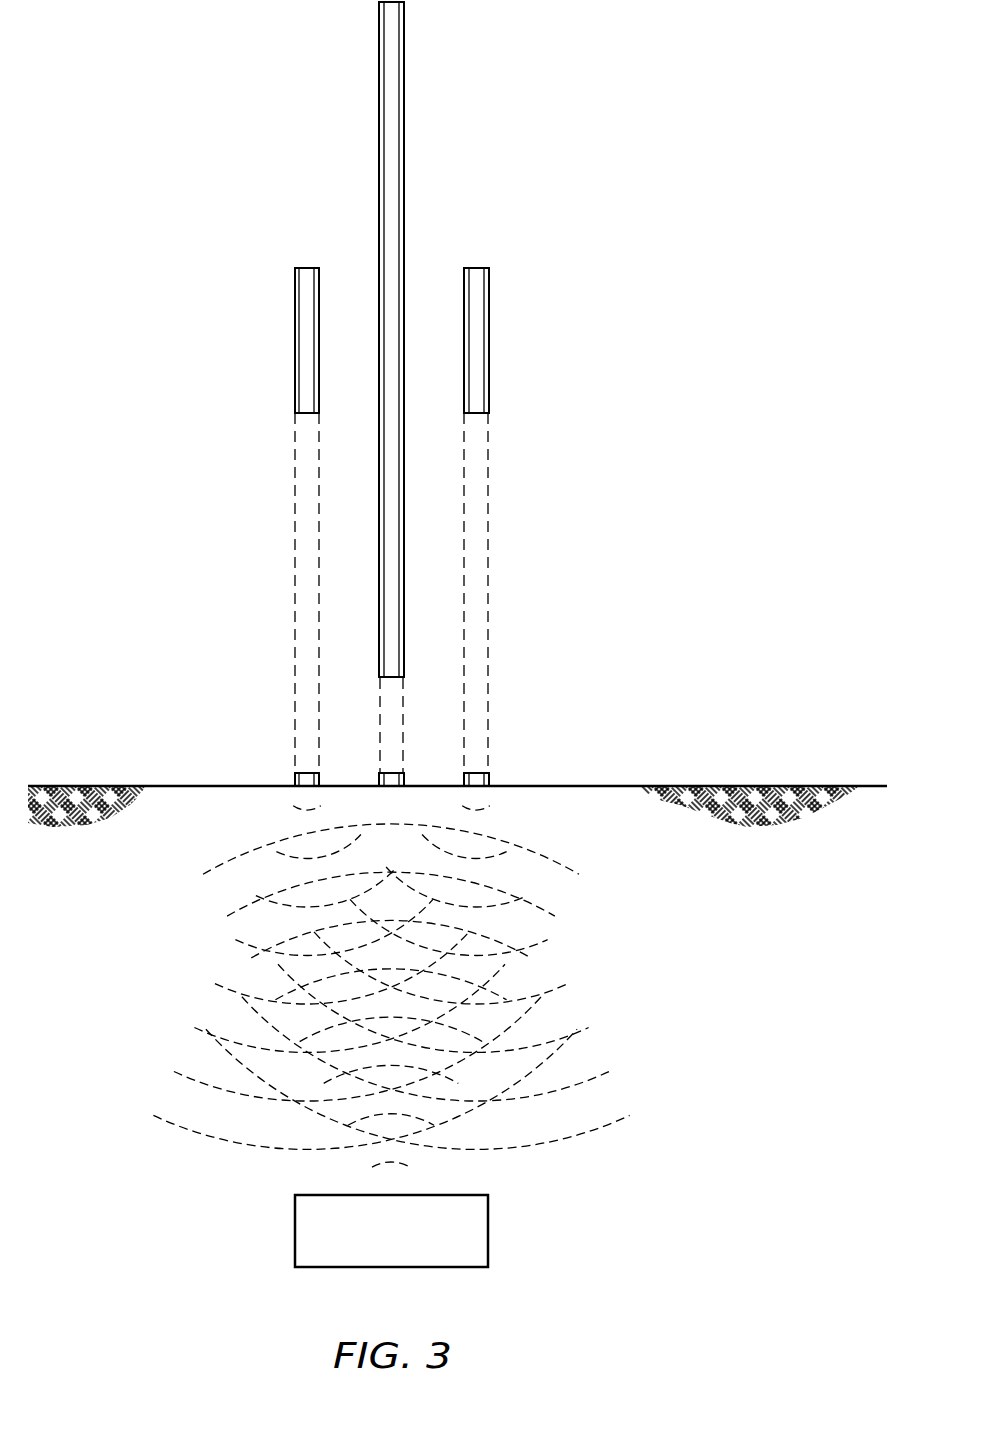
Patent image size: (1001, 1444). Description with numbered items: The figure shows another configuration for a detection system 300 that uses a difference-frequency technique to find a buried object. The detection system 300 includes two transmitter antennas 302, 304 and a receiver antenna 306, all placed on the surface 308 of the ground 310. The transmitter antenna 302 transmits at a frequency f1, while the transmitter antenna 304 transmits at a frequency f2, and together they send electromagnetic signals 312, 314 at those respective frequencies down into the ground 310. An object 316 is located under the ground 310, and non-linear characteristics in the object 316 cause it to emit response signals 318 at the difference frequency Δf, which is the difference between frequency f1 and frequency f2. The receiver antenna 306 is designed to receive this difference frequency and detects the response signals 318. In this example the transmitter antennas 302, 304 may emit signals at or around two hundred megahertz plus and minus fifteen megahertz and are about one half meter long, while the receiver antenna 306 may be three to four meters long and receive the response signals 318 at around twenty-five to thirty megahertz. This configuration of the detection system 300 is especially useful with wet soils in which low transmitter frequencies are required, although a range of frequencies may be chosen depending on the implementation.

The detection system 300 is at (121, 208).
The transmitter antenna 302 is at (294, 337).
The transmitter antenna 304 is at (489, 337).
The receiver antenna 306 is at (404, 190).
The surface 308 is at (688, 785).
The ground 310 is at (762, 822).
The electromagnetic signals 312 is at (233, 1140).
The electromagnetic signals 314 is at (548, 1140).
The object 316 is at (372, 1268).
The response signals 318 is at (543, 909).